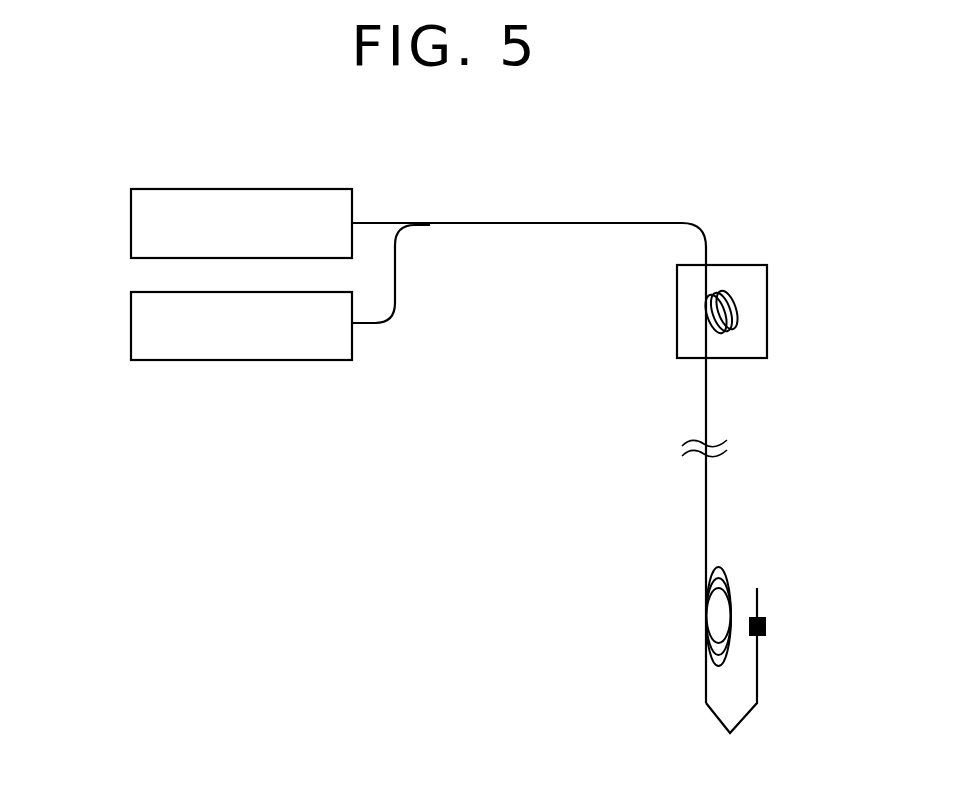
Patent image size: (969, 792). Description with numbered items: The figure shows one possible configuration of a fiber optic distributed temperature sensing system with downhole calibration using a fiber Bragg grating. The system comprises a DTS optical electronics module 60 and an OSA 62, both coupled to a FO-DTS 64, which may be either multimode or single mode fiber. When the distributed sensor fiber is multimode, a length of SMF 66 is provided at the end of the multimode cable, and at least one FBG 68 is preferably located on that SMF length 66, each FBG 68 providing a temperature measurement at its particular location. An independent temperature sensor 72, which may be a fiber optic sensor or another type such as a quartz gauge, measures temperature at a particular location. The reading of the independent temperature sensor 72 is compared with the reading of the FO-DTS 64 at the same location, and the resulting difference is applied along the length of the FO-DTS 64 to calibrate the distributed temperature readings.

The DTS optical electronics module 60 is at (131, 225).
The OSA 62 is at (131, 325).
The FO-DTS 64 is at (706, 395).
The length of SMF 66 is at (757, 680).
The FBG 68 is at (766, 625).
The independent temperature sensor 72 is at (767, 305).